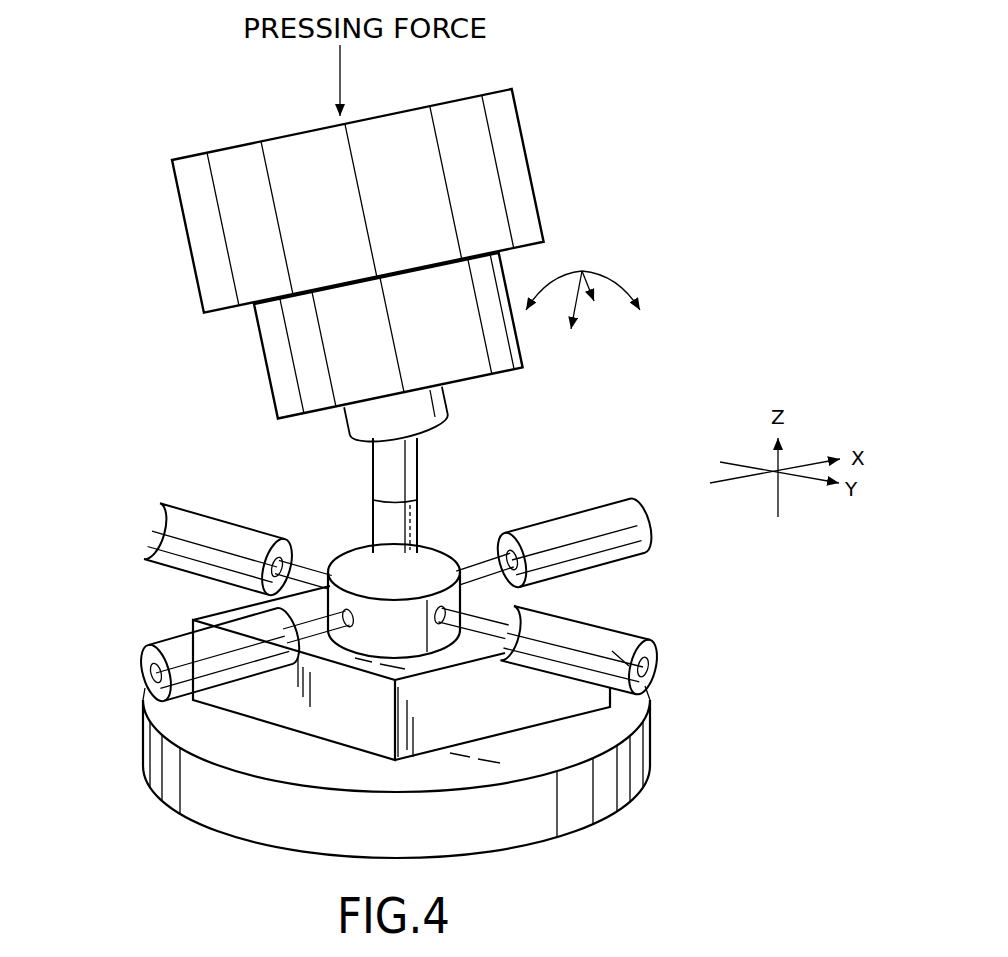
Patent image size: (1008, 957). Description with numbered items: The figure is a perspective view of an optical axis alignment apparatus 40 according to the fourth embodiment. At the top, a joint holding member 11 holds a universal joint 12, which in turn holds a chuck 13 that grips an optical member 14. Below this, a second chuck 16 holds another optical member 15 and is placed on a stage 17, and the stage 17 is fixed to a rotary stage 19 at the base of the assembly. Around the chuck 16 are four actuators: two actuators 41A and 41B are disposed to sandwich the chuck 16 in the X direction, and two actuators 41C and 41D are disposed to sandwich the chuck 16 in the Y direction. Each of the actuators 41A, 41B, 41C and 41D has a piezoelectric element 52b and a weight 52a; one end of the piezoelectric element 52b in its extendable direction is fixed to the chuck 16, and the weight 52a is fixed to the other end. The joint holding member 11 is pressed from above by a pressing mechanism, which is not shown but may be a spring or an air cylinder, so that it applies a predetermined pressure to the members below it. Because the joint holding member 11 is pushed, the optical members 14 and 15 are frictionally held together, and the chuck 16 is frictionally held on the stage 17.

The optical axis alignment apparatus 40 is at (307, 243).
The joint holding member 11 is at (200, 213).
The universal joint 12 is at (283, 357).
The chuck 13 is at (447, 413).
The optical member 14 is at (380, 458).
The optical member 15 is at (418, 527).
The chuck 16 is at (347, 570).
The stage 17 is at (543, 712).
The rotary stage 19 is at (157, 758).
The actuator 41A is at (587, 500).
The actuator 41B is at (156, 624).
The actuator 41C is at (669, 635).
The actuator 41D is at (188, 495).
The weight 52a is at (637, 553).
The piezoelectric element 52b is at (503, 548).